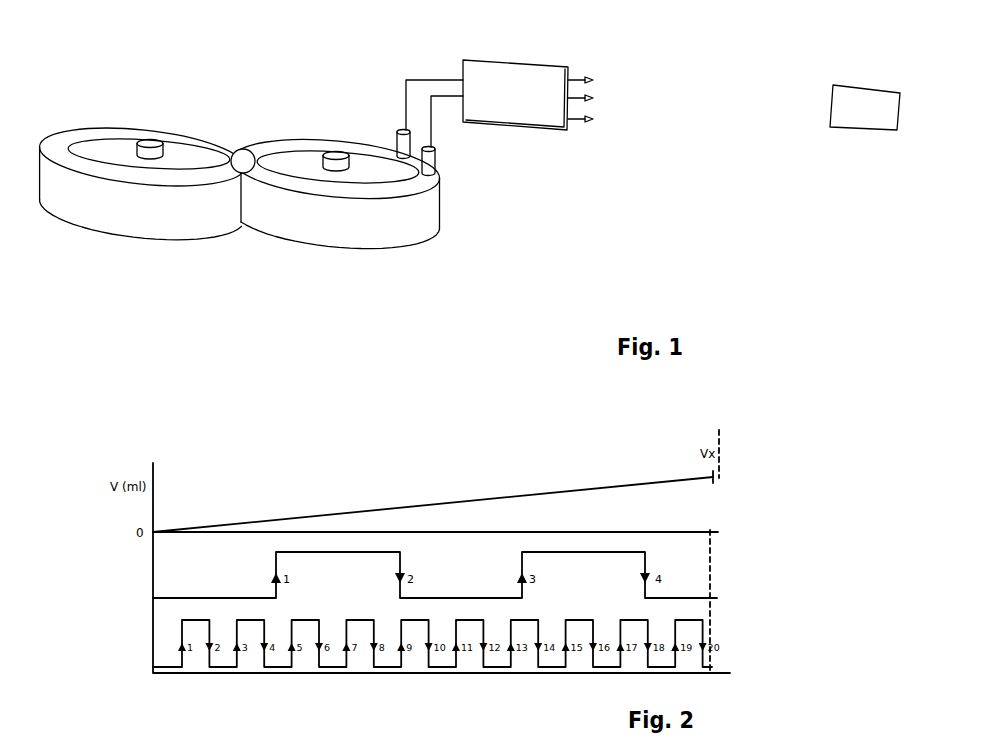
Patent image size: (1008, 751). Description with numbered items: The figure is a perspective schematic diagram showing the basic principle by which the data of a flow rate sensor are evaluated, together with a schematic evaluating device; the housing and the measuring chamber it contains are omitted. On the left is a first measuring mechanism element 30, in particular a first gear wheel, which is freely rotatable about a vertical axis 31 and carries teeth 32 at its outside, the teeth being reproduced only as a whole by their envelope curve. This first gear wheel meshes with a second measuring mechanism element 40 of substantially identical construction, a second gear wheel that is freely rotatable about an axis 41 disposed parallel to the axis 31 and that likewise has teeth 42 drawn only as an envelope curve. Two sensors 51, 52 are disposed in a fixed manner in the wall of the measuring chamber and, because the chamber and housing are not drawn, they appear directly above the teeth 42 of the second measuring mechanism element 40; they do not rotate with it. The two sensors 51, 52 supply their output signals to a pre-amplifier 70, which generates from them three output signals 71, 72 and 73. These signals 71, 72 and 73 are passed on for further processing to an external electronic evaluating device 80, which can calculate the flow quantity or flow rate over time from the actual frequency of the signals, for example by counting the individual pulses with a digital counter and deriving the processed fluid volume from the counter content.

The first measuring mechanism element 30 is at (67, 200).
The vertical axis 31 is at (151, 140).
The teeth 32 is at (63, 146).
The second measuring mechanism element 40 is at (381, 233).
The axis 41 is at (331, 152).
The teeth 42 is at (273, 147).
The sensor 51 is at (438, 158).
The sensor 52 is at (396, 142).
The pre-amplifier 70 is at (538, 110).
The output signal 71 is at (587, 78).
The output signal 72 is at (593, 97).
The output signal 73 is at (587, 125).
The external electronic evaluating device 80 is at (862, 110).